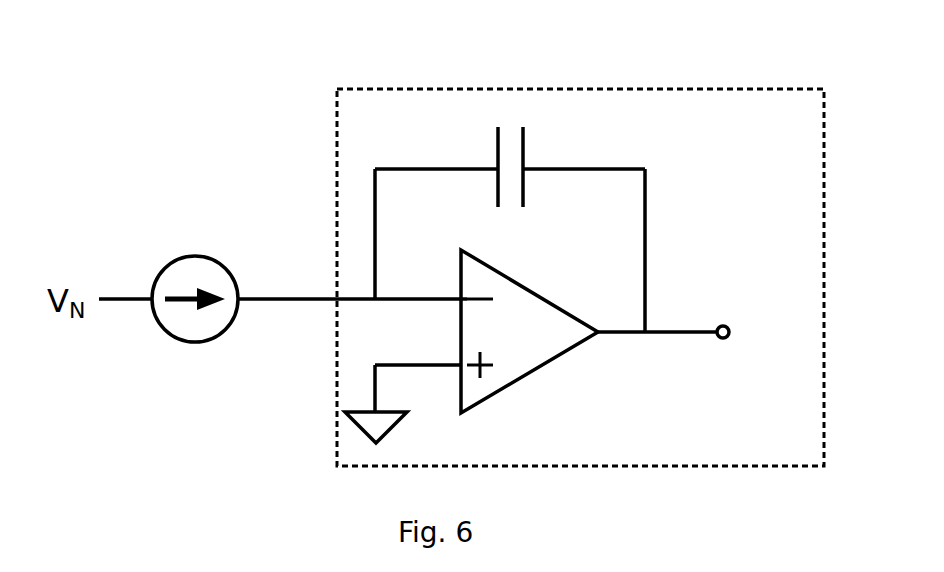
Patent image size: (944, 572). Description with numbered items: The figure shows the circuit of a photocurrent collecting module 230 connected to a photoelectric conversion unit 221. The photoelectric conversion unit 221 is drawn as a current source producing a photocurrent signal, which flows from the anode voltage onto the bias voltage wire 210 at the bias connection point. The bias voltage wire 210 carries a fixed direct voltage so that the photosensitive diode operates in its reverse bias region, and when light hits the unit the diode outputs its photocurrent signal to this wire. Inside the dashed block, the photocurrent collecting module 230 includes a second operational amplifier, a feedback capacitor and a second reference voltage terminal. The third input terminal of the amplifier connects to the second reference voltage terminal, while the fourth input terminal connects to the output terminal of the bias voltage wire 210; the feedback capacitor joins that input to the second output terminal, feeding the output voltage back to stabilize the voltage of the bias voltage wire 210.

The photoelectric conversion unit 221 is at (192, 195).
The bias voltage wire 210 is at (287, 303).
The photocurrent collecting module 230 is at (660, 88).